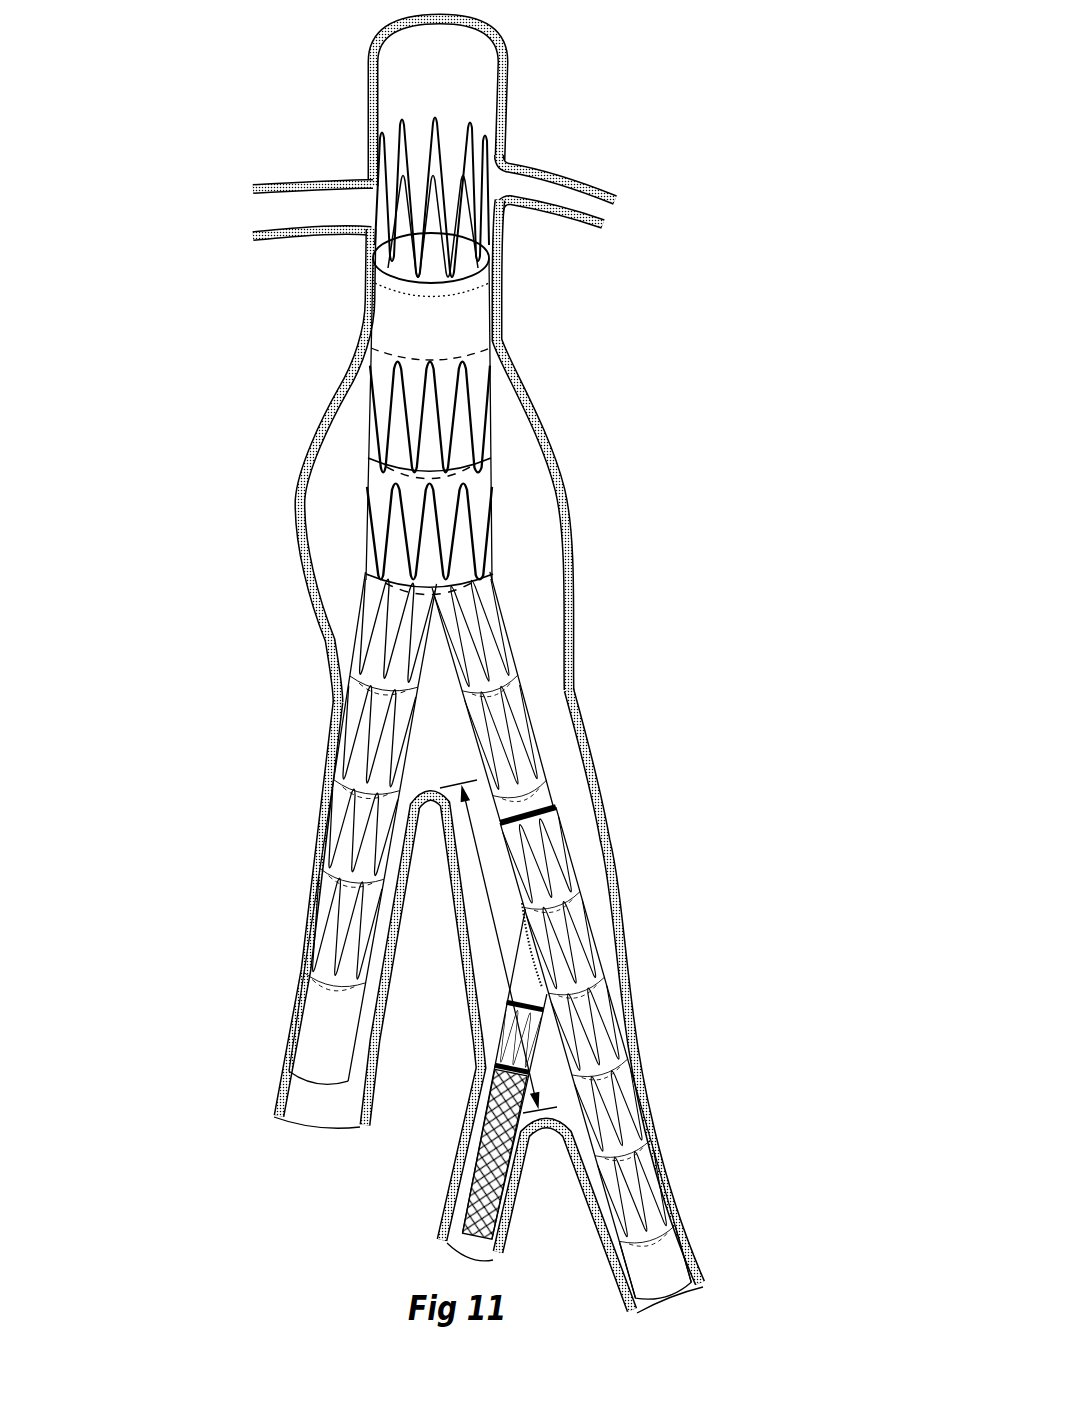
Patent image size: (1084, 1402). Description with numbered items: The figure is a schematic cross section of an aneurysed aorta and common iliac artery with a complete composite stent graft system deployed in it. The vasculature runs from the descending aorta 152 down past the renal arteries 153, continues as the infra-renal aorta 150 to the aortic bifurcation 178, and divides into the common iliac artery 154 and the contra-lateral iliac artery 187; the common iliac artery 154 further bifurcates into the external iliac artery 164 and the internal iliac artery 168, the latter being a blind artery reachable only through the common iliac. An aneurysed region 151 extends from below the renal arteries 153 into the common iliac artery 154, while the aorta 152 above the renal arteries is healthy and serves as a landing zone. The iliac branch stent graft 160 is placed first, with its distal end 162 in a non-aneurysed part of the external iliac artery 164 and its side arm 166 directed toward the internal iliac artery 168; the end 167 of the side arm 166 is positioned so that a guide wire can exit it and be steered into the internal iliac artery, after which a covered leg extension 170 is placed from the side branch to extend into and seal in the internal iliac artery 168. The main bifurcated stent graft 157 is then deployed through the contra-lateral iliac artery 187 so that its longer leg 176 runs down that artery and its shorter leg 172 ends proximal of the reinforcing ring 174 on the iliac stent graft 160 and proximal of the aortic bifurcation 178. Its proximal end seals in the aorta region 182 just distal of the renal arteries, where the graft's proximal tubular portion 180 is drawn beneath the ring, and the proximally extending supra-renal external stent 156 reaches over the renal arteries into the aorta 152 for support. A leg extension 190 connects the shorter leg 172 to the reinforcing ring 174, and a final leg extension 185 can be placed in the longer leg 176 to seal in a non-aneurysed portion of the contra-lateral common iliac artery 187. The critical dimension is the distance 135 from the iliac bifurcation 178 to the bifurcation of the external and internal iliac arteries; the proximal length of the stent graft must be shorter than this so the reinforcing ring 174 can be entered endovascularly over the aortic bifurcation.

The distance 135 is at (487, 920).
The infra-renal aorta 150 is at (570, 527).
The aneurysed region 151 is at (517, 473).
The descending aorta 152 is at (445, 93).
The renal arteries 153 is at (313, 185).
The common iliac artery 154 is at (615, 857).
The proximally extending external stent 156 is at (466, 150).
The bifurcated stent graft 157 is at (443, 497).
The iliac branch stent graft 160 is at (588, 976).
The distal end 162 is at (620, 1103).
The external iliac artery 164 is at (693, 1243).
The side arm 166 is at (527, 997).
The end of the side branch 167 is at (480, 1073).
The internal iliac artery 168 is at (460, 1187).
The covered leg extension 170 is at (470, 1132).
The shorter leg 172 is at (493, 633).
The reinforcing ring 174 is at (553, 807).
The longer leg 176 is at (372, 657).
The aortic bifurcation 178 is at (447, 785).
The proximal graft tube 180 is at (453, 317).
The aorta region 182 is at (363, 294).
The leg extension 185 is at (343, 850).
The contra-lateral iliac artery 187 is at (283, 1037).
The leg extension 190 is at (523, 752).